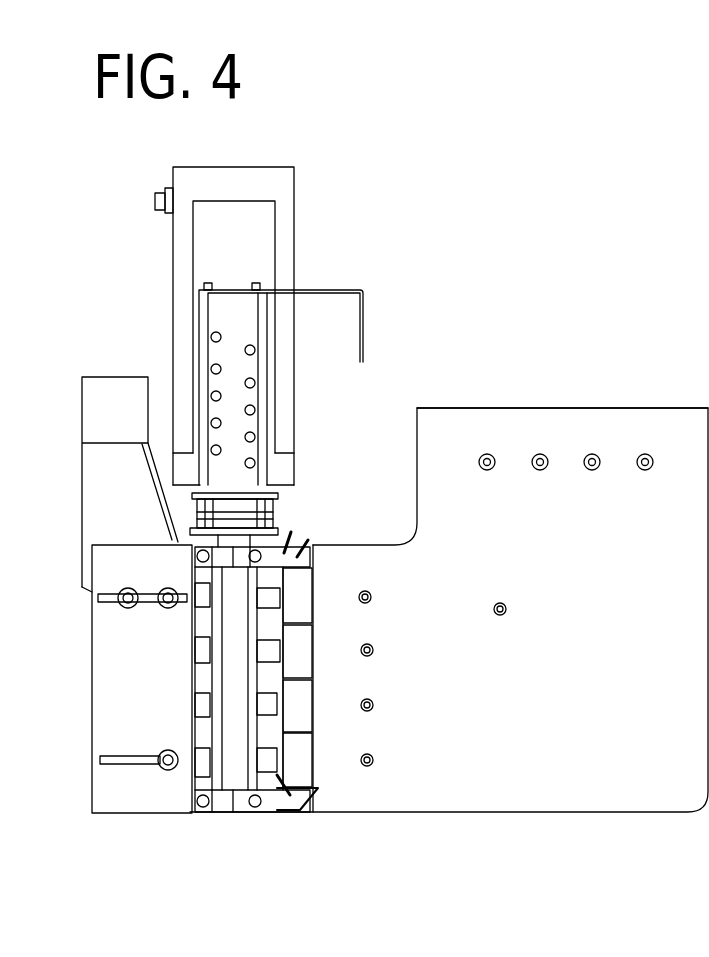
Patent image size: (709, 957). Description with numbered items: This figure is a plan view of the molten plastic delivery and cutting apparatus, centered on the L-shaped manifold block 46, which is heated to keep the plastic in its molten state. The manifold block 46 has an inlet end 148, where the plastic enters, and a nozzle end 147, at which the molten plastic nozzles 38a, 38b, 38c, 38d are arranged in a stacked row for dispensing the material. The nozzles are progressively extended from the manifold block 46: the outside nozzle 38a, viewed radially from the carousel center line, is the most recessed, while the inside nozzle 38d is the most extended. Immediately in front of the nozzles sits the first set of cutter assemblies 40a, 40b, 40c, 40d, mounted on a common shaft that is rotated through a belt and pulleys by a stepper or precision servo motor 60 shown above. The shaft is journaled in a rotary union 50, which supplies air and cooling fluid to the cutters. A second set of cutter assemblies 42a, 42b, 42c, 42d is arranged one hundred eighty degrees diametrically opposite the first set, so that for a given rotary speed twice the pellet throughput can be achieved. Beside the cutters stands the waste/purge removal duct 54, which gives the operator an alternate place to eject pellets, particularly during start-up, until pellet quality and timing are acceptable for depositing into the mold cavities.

The servo motor 60 is at (294, 244).
The rotary union 50 is at (243, 323).
The waste/purge removal duct 54 is at (82, 495).
The inlet end 148 is at (512, 408).
The manifold block 46 is at (614, 693).
The cutter assembly 40a is at (272, 600).
The cutter assembly 40b is at (268, 652).
The cutter assembly 40c is at (268, 705).
The cutter assembly 40d is at (268, 757).
The molten plastic nozzle 38a is at (300, 592).
The molten plastic nozzle 38b is at (302, 643).
The molten plastic nozzle 38c is at (302, 703).
The molten plastic nozzle 38d is at (302, 752).
The cutter assembly 42a is at (198, 575).
The cutter assembly 42b is at (197, 621).
The cutter assembly 42c is at (197, 686).
The cutter assembly 42d is at (197, 735).
The nozzle end 147 is at (313, 816).